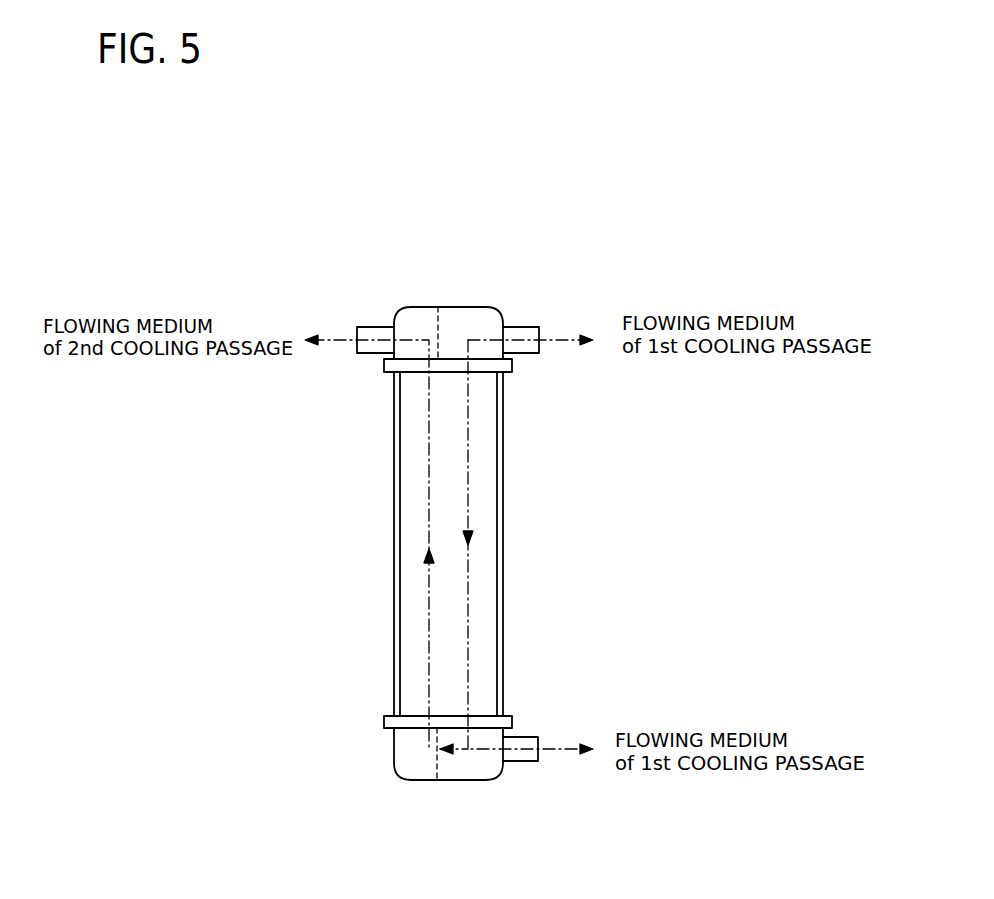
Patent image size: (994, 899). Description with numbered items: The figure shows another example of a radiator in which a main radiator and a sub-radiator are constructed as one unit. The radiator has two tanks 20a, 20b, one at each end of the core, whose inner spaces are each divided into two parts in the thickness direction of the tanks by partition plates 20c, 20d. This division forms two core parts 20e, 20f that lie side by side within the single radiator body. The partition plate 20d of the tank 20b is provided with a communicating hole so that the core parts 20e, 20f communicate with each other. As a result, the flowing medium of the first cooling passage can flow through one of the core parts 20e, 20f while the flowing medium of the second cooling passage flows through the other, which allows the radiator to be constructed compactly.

The tank 20a is at (483, 307).
The tank 20b is at (483, 780).
The partition plate 20c is at (437, 335).
The partition plate 20d is at (437, 767).
The core part 20e is at (517, 545).
The core part 20f is at (380, 545).